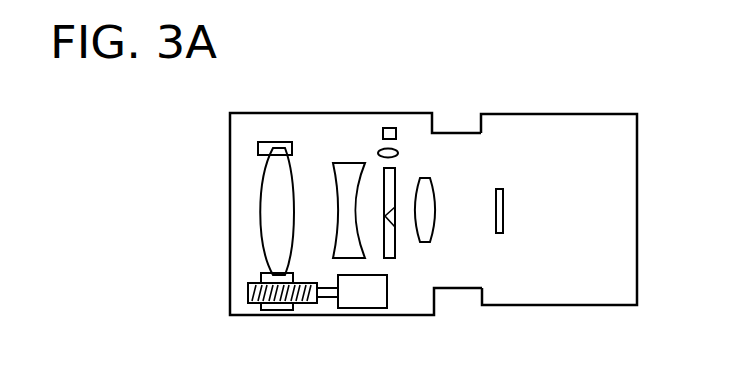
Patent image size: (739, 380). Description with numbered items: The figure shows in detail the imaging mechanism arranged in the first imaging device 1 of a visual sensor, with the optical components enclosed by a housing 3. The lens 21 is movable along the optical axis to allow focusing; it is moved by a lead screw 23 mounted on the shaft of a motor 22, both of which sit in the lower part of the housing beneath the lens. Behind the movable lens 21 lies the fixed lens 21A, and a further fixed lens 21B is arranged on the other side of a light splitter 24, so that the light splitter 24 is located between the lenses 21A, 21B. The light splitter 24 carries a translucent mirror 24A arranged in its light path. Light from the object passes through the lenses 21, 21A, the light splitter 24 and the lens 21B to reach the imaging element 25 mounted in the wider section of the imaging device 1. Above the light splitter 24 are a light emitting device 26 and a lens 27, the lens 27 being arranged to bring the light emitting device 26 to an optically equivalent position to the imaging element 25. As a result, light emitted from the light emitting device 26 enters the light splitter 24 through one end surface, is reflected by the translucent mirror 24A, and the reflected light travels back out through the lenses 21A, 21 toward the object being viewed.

The imaging device 1 is at (573, 114).
The lens barrel housing 3 is at (238, 127).
The lens 21 is at (259, 190).
The fixed lens 21A is at (342, 162).
The fixed lens 21B is at (435, 191).
The motor 22 is at (362, 293).
The lead screw 23 is at (302, 303).
The light splitter 24 is at (395, 186).
The translucent mirror 24A is at (395, 227).
The imaging element 25 is at (503, 205).
The light emitting device 26 is at (382, 131).
The lens 27 is at (398, 150).